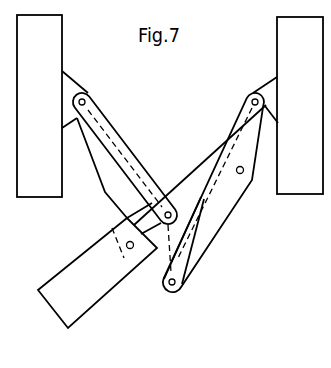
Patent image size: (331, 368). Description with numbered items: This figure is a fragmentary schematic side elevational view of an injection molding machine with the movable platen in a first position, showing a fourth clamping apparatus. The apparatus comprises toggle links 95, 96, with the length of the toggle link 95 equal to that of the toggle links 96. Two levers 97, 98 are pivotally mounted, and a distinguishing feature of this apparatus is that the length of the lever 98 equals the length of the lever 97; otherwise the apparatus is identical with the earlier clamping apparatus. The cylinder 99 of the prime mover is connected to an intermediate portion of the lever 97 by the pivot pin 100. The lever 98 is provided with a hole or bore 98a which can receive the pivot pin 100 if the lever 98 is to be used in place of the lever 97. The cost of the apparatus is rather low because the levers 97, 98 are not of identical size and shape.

The toggle link 95 is at (128, 157).
The toggle link 96 is at (213, 156).
The lever 97 is at (114, 194).
The lever 98 is at (208, 226).
The hole or bore 98a is at (243, 173).
The cylinder of the prime mover 99 is at (103, 291).
The pivot pin 100 is at (131, 249).